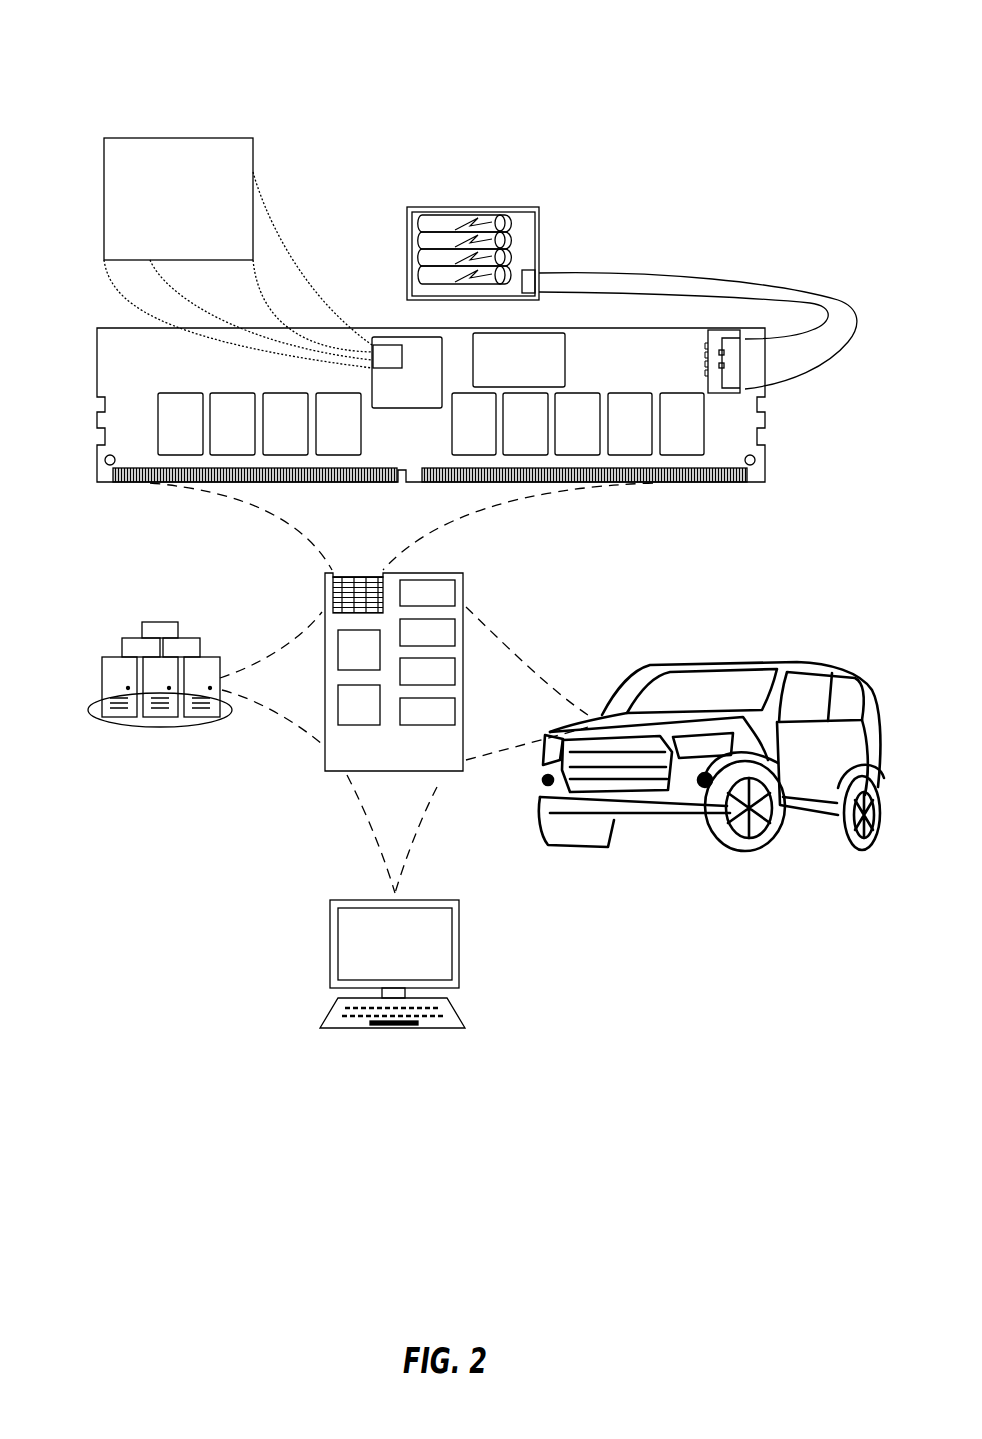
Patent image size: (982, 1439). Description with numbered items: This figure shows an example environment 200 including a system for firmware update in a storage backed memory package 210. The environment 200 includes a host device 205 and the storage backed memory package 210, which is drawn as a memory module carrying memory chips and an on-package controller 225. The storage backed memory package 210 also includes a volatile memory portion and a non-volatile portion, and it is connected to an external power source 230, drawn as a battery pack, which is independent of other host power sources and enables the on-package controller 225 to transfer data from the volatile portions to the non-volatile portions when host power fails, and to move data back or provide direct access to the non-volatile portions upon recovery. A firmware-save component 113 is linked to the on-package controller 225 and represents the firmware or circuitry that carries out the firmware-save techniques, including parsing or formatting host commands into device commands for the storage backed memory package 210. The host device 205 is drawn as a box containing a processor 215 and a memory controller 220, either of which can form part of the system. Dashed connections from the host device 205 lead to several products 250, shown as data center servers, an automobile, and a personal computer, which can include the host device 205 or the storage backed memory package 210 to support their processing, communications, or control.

The environment 200 is at (763, 36).
The firmware-save component 113 is at (104, 137).
The storage backed memory package 210 is at (117, 328).
The on-package controller 225 is at (378, 408).
The power source 230 is at (407, 207).
The host device 205 is at (463, 605).
The processor 215 is at (338, 632).
The memory controller 220 is at (427, 580).
The products 250 is at (102, 660).